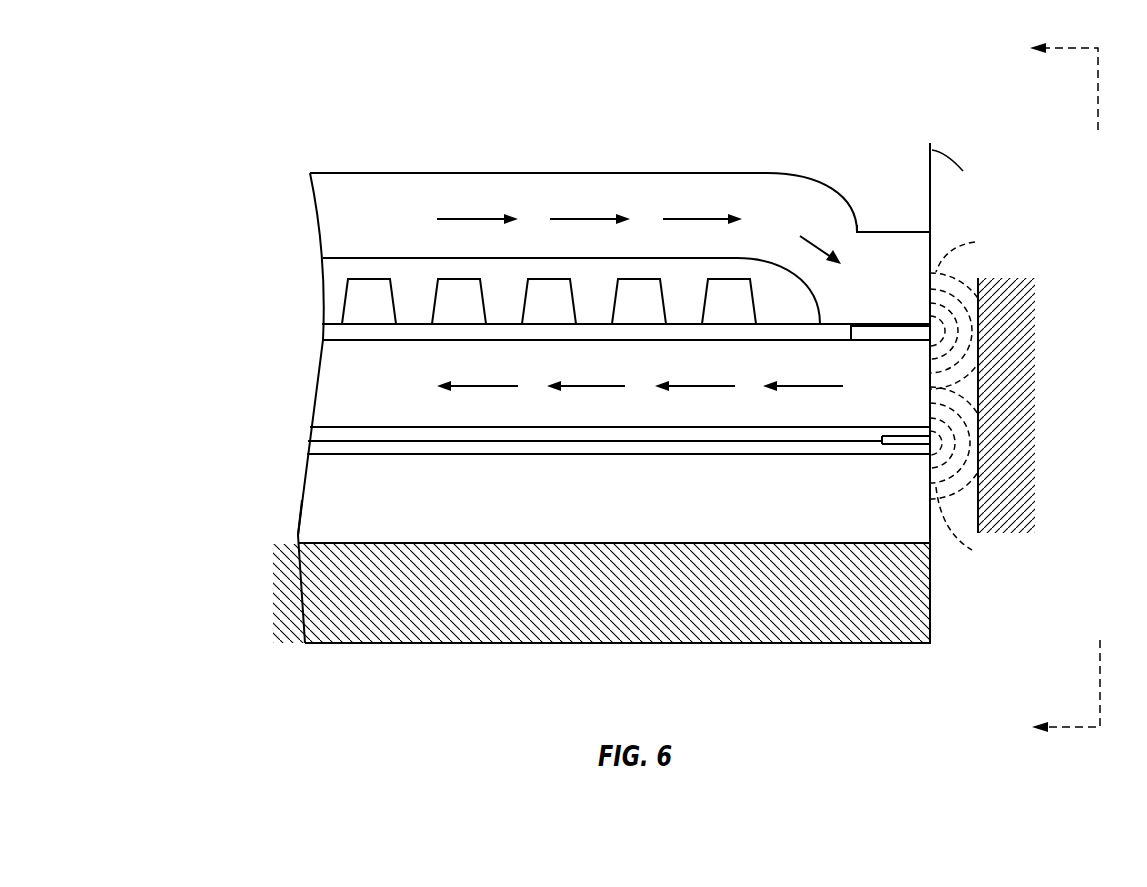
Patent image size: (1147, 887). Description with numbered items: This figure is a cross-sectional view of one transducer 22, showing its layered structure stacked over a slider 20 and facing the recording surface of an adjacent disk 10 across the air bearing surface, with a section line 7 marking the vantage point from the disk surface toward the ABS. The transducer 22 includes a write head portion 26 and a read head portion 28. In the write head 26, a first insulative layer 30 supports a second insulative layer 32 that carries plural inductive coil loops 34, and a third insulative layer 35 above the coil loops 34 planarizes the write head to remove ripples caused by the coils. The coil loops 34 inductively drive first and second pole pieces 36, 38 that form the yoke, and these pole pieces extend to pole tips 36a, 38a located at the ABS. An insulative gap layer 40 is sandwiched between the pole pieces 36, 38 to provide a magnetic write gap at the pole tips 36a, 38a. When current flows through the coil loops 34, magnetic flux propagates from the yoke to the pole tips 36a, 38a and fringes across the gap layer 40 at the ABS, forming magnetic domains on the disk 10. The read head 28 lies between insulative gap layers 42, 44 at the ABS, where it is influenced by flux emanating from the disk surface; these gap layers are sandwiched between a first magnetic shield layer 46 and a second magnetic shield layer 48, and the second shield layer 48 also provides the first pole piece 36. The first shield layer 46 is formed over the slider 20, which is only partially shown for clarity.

The transducer 22 is at (288, 90).
The section line of FIG. 7 is at (1056, 388).
The second pole piece 38 is at (653, 177).
The transducer write head portion 26 is at (890, 200).
The pole tip 38a is at (912, 307).
The first insulative layer 30 is at (498, 267).
The second insulative layer 32 is at (498, 267).
The third insulative layer 35 is at (325, 257).
The inductive coil loops 34 is at (350, 288).
The insulative gap layer 40 is at (323, 333).
The second magnetic shield layer 48 is at (563, 388).
The first pole piece 36 is at (328, 387).
The pole tip 36a is at (912, 383).
The insulative gap layer 42 is at (572, 443).
The insulative gap layer 44 is at (292, 428).
The transducer read head portion 28 is at (900, 443).
The first magnetic shield layer 46 is at (308, 515).
The slider 20 is at (764, 645).
The disk 10 is at (1018, 385).